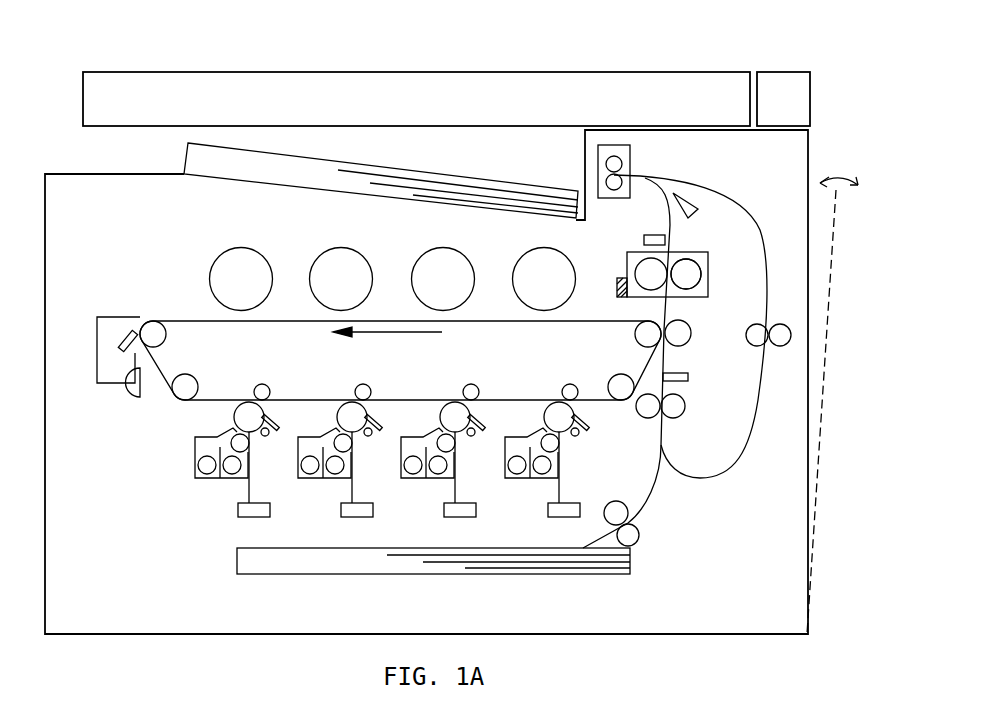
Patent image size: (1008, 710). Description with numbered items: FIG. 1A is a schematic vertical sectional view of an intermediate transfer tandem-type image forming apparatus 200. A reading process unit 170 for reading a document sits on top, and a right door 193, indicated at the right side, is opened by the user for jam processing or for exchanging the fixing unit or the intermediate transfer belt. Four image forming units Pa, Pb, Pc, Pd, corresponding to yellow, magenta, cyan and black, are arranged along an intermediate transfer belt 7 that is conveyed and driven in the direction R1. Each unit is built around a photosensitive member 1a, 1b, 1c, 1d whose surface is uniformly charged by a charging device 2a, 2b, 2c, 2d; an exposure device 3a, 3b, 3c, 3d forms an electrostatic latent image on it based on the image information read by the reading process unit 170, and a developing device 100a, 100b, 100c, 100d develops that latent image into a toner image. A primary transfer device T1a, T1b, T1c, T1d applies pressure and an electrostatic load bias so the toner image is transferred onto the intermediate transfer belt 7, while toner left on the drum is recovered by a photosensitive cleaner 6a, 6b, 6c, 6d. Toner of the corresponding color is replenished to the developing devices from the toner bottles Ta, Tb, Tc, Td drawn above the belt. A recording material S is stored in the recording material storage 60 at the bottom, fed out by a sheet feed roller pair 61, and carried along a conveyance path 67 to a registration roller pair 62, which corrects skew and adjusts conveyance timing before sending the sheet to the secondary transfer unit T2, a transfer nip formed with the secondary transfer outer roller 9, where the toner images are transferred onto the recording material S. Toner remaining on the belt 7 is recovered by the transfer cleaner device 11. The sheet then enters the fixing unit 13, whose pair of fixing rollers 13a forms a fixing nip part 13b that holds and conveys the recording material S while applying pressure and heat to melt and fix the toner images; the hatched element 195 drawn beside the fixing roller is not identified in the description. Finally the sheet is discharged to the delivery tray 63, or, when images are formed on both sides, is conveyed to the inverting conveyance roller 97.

The image forming apparatus 200 is at (496, 21).
The reading process unit 170 is at (636, 72).
The delivery tray 63 is at (185, 172).
The right door unit 193 is at (833, 233).
The fixing unit 13 is at (631, 250).
The fixing roller 13a is at (636, 273).
The fixing nip part 13b is at (683, 292).
The heater 195 is at (617, 287).
The intermediate transfer belt 7 is at (220, 320).
The secondary transfer outer roller 9 is at (692, 333).
The secondary transfer unit T2 is at (680, 346).
The belt conveyance direction R1 is at (387, 344).
The transfer cleaner device 11 is at (97, 334).
The registration roller pair 62 is at (684, 410).
The inverting conveyance roller 97 is at (792, 335).
The sheet feed roller pair 61 is at (640, 532).
The conveyance path 67 is at (663, 472).
The recording material storage 60 is at (258, 575).
The recording material S is at (450, 566).
The toner bottle Ta is at (236, 250).
The toner bottle Tb is at (337, 250).
The toner bottle Tc is at (438, 250).
The toner bottle Td is at (562, 253).
The primary transfer device T1a is at (255, 386).
The primary transfer roller T1b is at (356, 386).
The primary transfer roller T1c is at (464, 386).
The primary transfer roller T1d is at (563, 386).
The image forming unit Pa is at (231, 483).
The image forming unit Pb is at (341, 477).
The image forming unit Pc is at (444, 477).
The image forming unit Pd is at (558, 475).
The photosensitive member 1a is at (234, 412).
The photosensitive member 1b is at (331, 452).
The photosensitive member 1c is at (434, 452).
The photosensitive member 1d is at (538, 452).
The charging device 2a is at (265, 437).
The charging device 2b is at (373, 455).
The charging device 2c is at (476, 455).
The charging device 2d is at (580, 455).
The exposure device 3a is at (250, 517).
The exposure device 3b is at (363, 528).
The exposure device 3c is at (466, 528).
The exposure device 3d is at (570, 525).
The photosensitive cleaner 6a is at (279, 430).
The photosensitive cleaner 6b is at (386, 460).
The photosensitive cleaner 6c is at (488, 460).
The photosensitive cleaner 6d is at (602, 440).
The developing device 100a is at (198, 478).
The developing device 100b is at (314, 477).
The developing device 100c is at (417, 477).
The developing device 100d is at (521, 477).